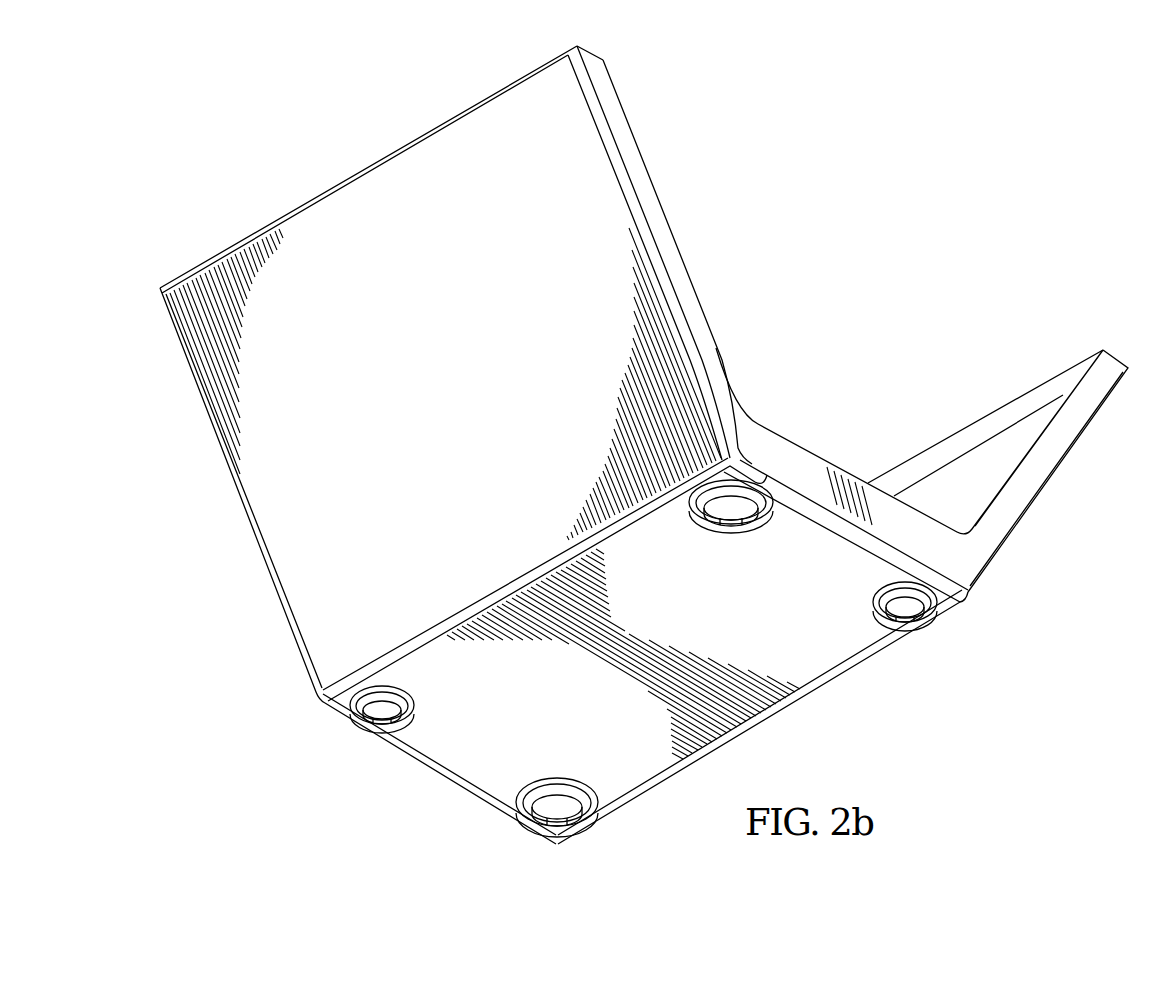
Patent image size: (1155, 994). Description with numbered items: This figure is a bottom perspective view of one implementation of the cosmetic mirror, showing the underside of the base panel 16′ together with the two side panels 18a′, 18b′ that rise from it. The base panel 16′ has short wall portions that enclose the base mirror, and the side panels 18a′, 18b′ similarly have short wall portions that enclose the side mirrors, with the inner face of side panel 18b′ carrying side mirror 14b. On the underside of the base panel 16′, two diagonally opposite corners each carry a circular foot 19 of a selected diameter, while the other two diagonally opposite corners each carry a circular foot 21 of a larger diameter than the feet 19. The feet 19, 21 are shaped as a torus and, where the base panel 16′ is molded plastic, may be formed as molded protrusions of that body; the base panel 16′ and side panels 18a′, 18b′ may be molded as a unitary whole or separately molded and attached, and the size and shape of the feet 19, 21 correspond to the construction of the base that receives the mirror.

The side mirror 14b is at (979, 459).
The base panel 16′ is at (457, 767).
The side panel 18a′ is at (263, 522).
The side panel 18b′ is at (1050, 489).
The circular foot 19 is at (924, 628).
The circular foot 21 is at (731, 535).